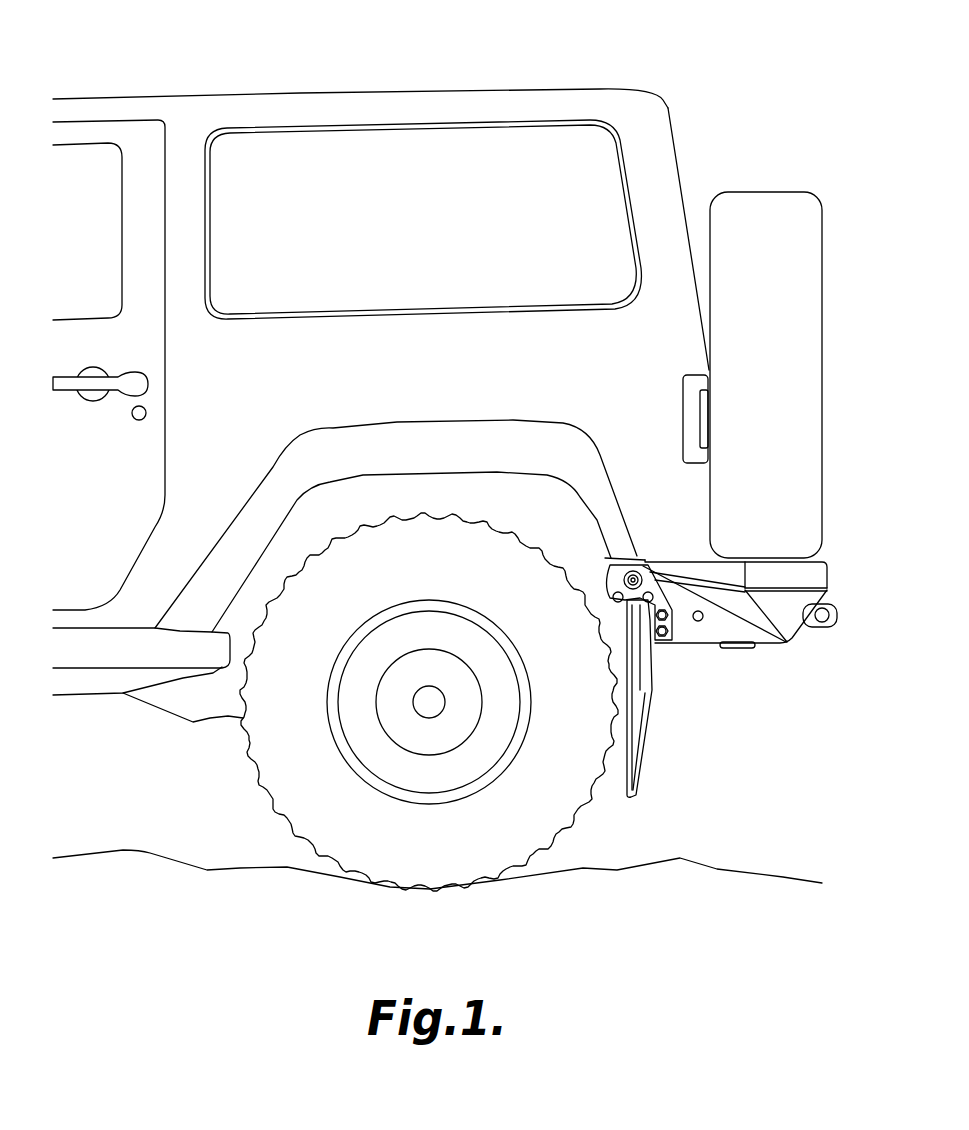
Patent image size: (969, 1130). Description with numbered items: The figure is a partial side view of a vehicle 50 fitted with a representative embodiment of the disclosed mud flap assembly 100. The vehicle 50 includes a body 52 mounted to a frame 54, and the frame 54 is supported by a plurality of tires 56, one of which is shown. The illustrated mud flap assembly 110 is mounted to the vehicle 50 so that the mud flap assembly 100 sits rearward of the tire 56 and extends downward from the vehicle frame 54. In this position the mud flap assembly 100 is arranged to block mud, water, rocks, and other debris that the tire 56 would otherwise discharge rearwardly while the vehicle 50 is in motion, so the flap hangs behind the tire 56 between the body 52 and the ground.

The vehicle 50 is at (559, 64).
The body 52 is at (676, 140).
The frame 54 is at (700, 630).
The tire 56 is at (252, 760).
The mud flap assembly 100 is at (707, 771).
The mud flap assembly 110 is at (662, 700).